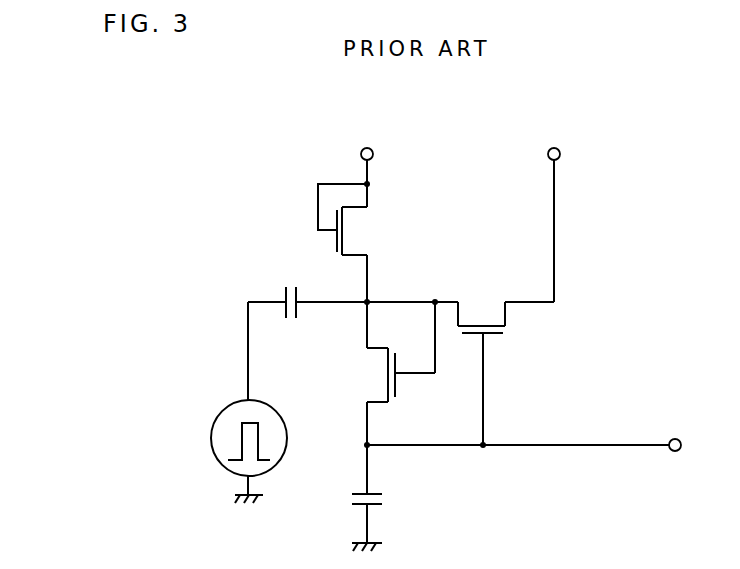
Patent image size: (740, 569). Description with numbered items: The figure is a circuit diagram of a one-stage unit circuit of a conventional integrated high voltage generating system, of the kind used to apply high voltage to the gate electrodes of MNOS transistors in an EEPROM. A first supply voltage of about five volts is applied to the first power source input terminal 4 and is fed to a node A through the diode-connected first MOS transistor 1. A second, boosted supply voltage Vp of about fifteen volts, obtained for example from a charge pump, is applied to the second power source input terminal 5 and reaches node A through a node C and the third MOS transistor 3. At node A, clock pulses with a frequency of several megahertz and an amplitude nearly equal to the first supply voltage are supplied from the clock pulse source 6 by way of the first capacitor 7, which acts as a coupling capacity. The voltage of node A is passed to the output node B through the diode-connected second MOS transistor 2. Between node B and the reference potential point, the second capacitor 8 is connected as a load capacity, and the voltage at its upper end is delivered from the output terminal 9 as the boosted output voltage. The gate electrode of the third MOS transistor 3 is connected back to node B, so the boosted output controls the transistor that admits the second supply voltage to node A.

The first MOS transistor 1 is at (355, 228).
The second MOS transistor 2 is at (373, 377).
The third MOS transistor 3 is at (483, 307).
The first power source input terminal 4 is at (362, 150).
The second power source input terminal 5 is at (560, 153).
The clock pulse source 6 is at (211, 435).
The first capacitor 7 is at (290, 283).
The second capacitor 8 is at (382, 499).
The output terminal 9 is at (680, 438).